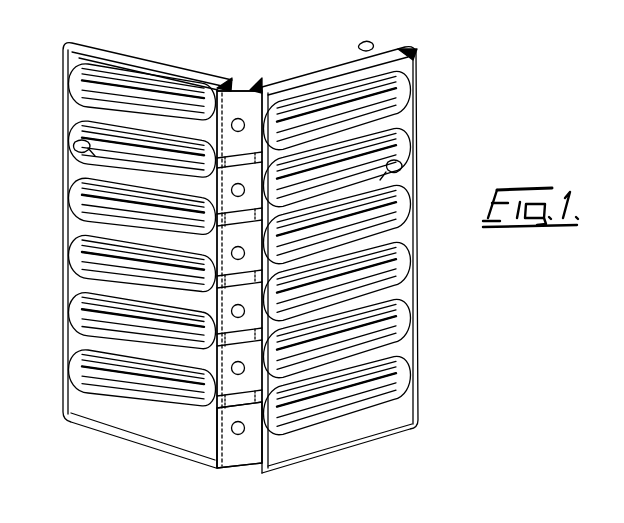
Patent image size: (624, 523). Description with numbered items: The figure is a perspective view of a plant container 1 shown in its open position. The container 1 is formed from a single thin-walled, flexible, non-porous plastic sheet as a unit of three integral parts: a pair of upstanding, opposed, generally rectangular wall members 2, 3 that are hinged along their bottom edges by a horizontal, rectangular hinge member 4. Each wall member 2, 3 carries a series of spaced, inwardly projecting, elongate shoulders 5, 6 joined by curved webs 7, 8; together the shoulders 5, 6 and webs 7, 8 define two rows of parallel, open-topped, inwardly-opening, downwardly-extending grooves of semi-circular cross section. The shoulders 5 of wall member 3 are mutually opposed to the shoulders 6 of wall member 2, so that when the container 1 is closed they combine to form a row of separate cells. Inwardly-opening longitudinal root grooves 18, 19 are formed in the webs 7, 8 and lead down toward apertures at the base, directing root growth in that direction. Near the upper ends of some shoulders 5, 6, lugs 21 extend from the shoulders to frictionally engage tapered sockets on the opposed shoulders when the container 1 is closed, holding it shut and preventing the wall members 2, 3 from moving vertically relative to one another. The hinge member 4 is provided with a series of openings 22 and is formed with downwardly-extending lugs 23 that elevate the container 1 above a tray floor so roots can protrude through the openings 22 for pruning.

The container 1 is at (268, 48).
The wall member 2 is at (412, 100).
The wall member 3 is at (152, 58).
The hinge member 4 is at (239, 463).
The shoulders 5 is at (182, 70).
The shoulders 6 is at (310, 74).
The curved webs 7 is at (63, 120).
The curved webs 8 is at (408, 143).
The root groove 18 is at (72, 148).
The root groove 19 is at (403, 168).
The lugs 21 is at (372, 44).
The openings 22 is at (233, 438).
The lugs 23 is at (243, 91).